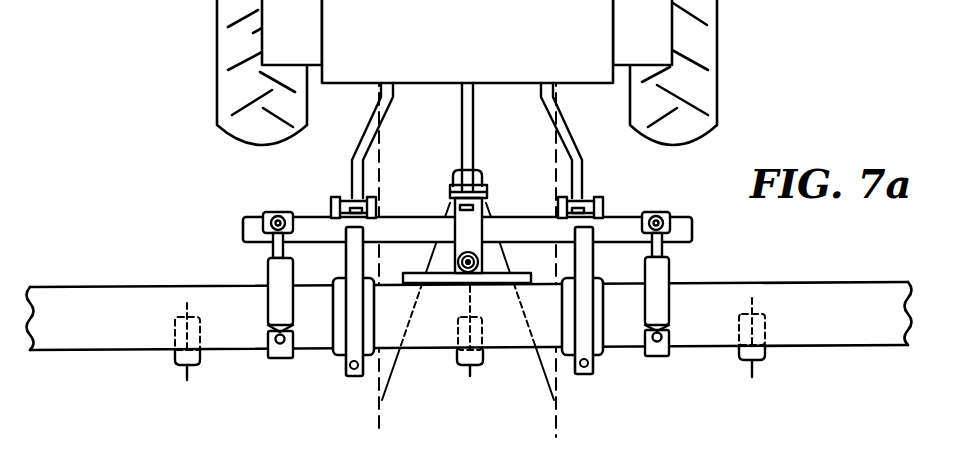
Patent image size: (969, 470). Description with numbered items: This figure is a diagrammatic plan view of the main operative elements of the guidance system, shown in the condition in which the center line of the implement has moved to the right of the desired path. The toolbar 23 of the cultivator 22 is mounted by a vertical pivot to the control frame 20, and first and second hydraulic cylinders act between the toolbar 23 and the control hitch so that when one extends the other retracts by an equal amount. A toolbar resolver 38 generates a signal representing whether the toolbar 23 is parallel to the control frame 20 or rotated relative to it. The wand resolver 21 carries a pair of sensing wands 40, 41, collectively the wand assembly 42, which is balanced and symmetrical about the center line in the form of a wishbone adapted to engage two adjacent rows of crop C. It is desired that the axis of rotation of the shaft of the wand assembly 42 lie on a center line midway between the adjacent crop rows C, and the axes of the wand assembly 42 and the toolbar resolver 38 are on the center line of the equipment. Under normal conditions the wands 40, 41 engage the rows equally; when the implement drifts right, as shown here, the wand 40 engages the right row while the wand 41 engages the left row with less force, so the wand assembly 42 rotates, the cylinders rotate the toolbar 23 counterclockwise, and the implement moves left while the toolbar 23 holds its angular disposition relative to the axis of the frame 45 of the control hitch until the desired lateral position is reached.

The control frame 20 is at (694, 224).
The wand resolver 21 is at (452, 180).
The cultivator 22 is at (779, 284).
The toolbar 23 is at (870, 323).
The toolbar resolver 38 is at (486, 265).
The sensing wand 40 is at (521, 256).
The sensing wand 41 is at (422, 278).
The wand assembly 42 is at (492, 211).
The frame 45 is at (310, 216).
The crop rows C is at (381, 421).